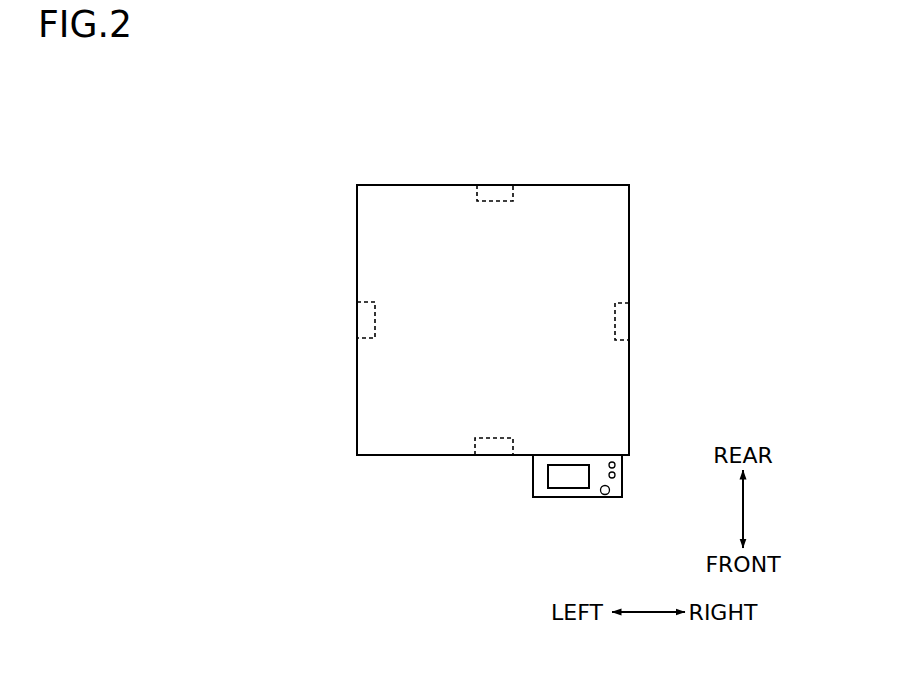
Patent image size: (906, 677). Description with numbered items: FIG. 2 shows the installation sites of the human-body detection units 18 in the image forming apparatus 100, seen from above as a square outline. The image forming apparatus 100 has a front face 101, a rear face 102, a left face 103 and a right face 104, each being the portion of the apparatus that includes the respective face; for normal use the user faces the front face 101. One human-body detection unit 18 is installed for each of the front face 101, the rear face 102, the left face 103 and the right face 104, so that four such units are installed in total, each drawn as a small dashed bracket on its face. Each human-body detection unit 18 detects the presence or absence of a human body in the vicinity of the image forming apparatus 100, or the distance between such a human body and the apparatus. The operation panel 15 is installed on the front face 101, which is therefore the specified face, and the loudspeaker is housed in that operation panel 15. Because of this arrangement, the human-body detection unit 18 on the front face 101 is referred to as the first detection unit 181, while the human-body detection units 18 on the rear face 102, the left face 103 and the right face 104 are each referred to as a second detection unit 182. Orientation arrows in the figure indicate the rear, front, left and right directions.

The image forming apparatus 100 is at (342, 158).
The front face 101 is at (415, 455).
The rear face 102 is at (574, 185).
The left face 103 is at (357, 243).
The right face 104 is at (629, 395).
The operation panel 15 is at (573, 497).
The human-body detection unit 18 is at (495, 324).
The first detection unit 181 is at (494, 455).
The second detection unit 182 is at (665, 322).